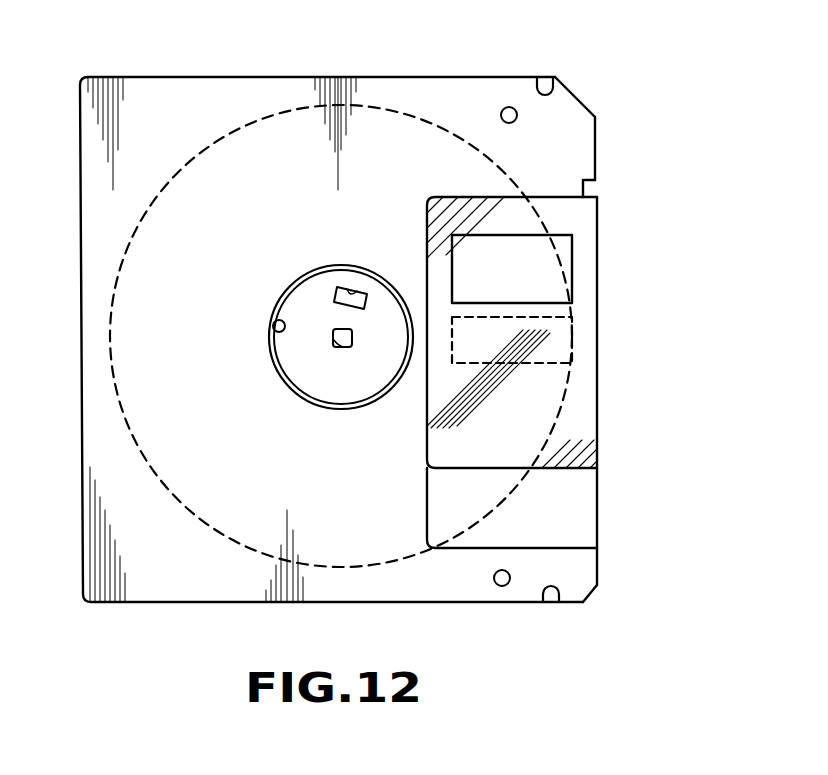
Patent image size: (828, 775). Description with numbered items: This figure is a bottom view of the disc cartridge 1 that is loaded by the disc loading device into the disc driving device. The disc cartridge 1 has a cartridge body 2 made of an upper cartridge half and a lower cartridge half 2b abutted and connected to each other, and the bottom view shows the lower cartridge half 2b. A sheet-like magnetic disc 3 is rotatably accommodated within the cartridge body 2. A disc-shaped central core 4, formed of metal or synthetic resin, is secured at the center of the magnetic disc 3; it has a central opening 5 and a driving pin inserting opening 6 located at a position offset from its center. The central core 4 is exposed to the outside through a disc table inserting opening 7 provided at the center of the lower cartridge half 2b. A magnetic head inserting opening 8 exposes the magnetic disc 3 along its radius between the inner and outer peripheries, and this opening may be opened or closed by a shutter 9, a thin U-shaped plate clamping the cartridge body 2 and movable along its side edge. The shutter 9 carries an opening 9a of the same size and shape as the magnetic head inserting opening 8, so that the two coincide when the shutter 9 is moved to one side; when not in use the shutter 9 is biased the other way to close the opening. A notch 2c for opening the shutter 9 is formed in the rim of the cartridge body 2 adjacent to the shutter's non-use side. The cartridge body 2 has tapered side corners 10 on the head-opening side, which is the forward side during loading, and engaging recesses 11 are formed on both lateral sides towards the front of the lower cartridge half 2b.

The disc cartridge 1 is at (143, 76).
The cartridge body 2 is at (421, 77).
The lower cartridge half 2b is at (472, 97).
The notch 2c is at (594, 183).
The magnetic disc 3 is at (288, 118).
The central core 4 is at (298, 300).
The central opening 5 is at (338, 347).
The driving pin inserting opening 6 is at (353, 292).
The disc table inserting opening 7 is at (274, 335).
The magnetic head inserting opening 8 is at (535, 317).
The shutter 9 is at (582, 394).
The opening 9a is at (530, 237).
The tapered side corner 10 is at (580, 98).
The engaging recess 11 is at (545, 76).